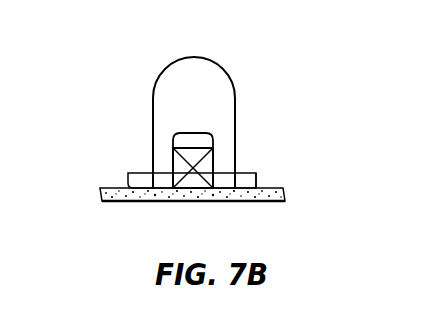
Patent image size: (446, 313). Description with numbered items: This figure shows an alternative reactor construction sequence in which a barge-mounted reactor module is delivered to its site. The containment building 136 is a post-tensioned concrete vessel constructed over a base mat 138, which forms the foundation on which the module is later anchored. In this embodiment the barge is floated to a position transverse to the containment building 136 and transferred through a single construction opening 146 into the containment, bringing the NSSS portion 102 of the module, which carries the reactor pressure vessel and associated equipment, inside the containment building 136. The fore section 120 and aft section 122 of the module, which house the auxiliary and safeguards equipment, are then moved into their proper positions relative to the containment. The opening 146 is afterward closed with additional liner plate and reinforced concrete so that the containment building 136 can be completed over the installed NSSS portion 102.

The containment building 136 is at (208, 57).
The construction opening 146 is at (212, 133).
The NSSS portion 102 is at (213, 146).
The fore section 120 is at (128, 173).
The aft section 122 is at (256, 177).
The base mat 138 is at (143, 202).